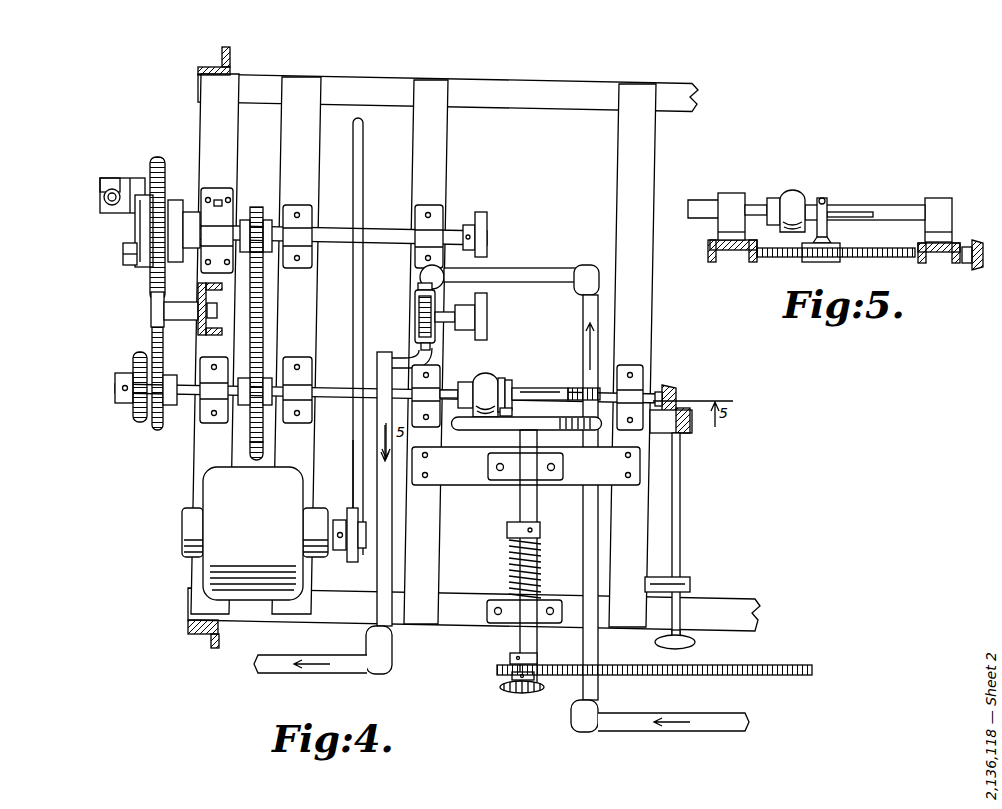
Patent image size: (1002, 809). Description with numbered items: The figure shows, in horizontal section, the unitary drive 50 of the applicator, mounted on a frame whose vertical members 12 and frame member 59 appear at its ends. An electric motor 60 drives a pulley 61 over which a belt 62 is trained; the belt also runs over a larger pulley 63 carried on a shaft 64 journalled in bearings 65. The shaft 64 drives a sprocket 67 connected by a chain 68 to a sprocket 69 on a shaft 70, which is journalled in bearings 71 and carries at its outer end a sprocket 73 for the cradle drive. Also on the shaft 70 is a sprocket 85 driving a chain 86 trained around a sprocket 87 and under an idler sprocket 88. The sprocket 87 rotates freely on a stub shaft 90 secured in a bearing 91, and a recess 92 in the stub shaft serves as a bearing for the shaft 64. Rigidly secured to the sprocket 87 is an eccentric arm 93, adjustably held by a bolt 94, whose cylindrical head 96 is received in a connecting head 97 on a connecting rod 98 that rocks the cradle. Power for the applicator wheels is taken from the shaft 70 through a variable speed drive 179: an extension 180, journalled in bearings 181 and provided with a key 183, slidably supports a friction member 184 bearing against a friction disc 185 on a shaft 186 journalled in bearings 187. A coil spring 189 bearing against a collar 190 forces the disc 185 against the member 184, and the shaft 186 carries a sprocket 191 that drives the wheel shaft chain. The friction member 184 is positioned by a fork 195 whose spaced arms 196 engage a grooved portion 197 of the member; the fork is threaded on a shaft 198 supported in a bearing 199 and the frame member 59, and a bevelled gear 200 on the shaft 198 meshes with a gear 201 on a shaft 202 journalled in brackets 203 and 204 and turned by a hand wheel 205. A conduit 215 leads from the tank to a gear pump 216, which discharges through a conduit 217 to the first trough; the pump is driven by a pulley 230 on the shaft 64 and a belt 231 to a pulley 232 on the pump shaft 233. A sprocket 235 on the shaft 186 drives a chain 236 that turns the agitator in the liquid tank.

In FIG. 4, the vertical members 12 is at (232, 55).
In FIG. 4, the unitary drive 50 is at (439, 352).
In FIG. 4, the frame member 59 is at (640, 298).
In FIG. 5, the frame member 59 is at (926, 264).
In FIG. 4, the electric motor 60 is at (222, 527).
In FIG. 4, the pulley 61 is at (347, 514).
In FIG. 4, the belt 62 is at (353, 463).
In FIG. 4, the larger pulley 63 is at (366, 182).
In FIG. 4, the shaft 64 is at (386, 228).
In FIG. 4, the bearings 65 is at (298, 230).
In FIG. 4, the sprocket 67 is at (256, 207).
In FIG. 4, the chain 68 is at (263, 325).
In FIG. 4, the sprocket 69 is at (263, 445).
In FIG. 4, the shaft 70 is at (327, 390).
In FIG. 5, the shaft 70 is at (704, 200).
In FIG. 4, the bearings 71 is at (212, 385).
In FIG. 4, the sprocket 73 is at (133, 362).
In FIG. 4, the sprocket 85 is at (170, 406).
In FIG. 4, the chain 86 is at (152, 350).
In FIG. 4, the sprocket 87 is at (150, 280).
In FIG. 4, the idler sprocket 88 is at (151, 313).
In FIG. 4, the stub shaft 90 is at (196, 215).
In FIG. 4, the bearing 91 is at (228, 205).
In FIG. 4, the recess 92 is at (185, 262).
In FIG. 4, the eccentric arm 93 is at (135, 226).
In FIG. 4, the bolt 94 is at (123, 255).
In FIG. 4, the cylindrical head 96 is at (140, 178).
In FIG. 4, the connecting head 97 is at (105, 180).
In FIG. 4, the connecting rod 98 is at (104, 195).
In FIG. 4, the variable speed drive 179 is at (520, 372).
In FIG. 4, the extension 180 is at (540, 388).
In FIG. 5, the extension 180 is at (888, 205).
In FIG. 4, the bearings 181 is at (432, 390).
In FIG. 5, the bearings 181 is at (743, 178).
In FIG. 4, the key 183 is at (574, 388).
In FIG. 5, the key 183 is at (850, 213).
In FIG. 4, the friction member 184 is at (483, 377).
In FIG. 5, the friction member 184 is at (785, 192).
In FIG. 4, the friction disc 185 is at (480, 430).
In FIG. 4, the shaft 186 is at (520, 500).
In FIG. 4, the bearings 187 is at (533, 470).
In FIG. 4, the coil spring 189 is at (509, 565).
In FIG. 4, the collar 190 is at (508, 537).
In FIG. 4, the sprocket 191 is at (523, 693).
In FIG. 5, the fork 195 is at (830, 243).
In FIG. 4, the spaced arms 196 is at (512, 411).
In FIG. 5, the spaced arms 196 is at (821, 198).
In FIG. 5, the grooved portion 197 is at (824, 200).
In FIG. 5, the shaft 198 is at (862, 258).
In FIG. 5, the bearing 199 is at (757, 263).
In FIG. 4, the bevelled gear 200 is at (672, 388).
In FIG. 5, the bevelled gear 200 is at (976, 240).
In FIG. 4, the gear 201 is at (692, 418).
In FIG. 4, the shaft 202 is at (680, 500).
In FIG. 4, the bracket 203 is at (688, 433).
In FIG. 4, the bracket 204 is at (690, 585).
In FIG. 4, the hand wheel 205 is at (693, 645).
In FIG. 4, the conduit 215 is at (557, 273).
In FIG. 4, the gear pump 216 is at (415, 318).
In FIG. 4, the conduit 217 is at (392, 514).
In FIG. 4, the pulley 230 is at (490, 220).
In FIG. 4, the belt 231 is at (480, 270).
In FIG. 4, the pulley 232 is at (488, 312).
In FIG. 4, the shaft 233 is at (480, 330).
In FIG. 4, the sprocket 235 is at (510, 660).
In FIG. 4, the chain 236 is at (622, 677).